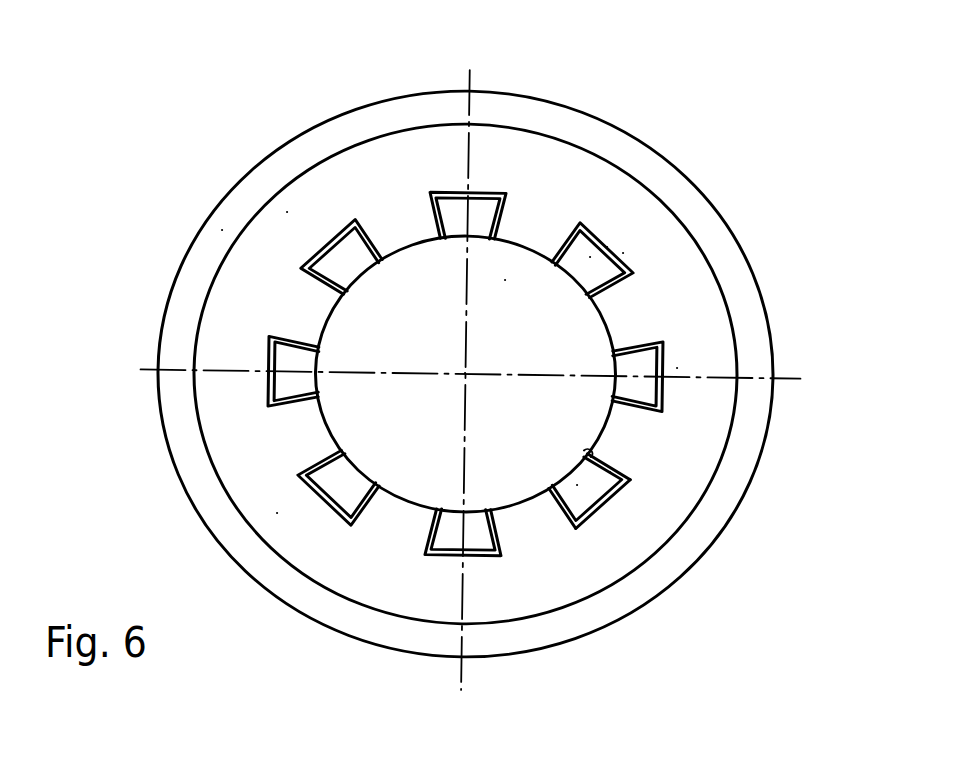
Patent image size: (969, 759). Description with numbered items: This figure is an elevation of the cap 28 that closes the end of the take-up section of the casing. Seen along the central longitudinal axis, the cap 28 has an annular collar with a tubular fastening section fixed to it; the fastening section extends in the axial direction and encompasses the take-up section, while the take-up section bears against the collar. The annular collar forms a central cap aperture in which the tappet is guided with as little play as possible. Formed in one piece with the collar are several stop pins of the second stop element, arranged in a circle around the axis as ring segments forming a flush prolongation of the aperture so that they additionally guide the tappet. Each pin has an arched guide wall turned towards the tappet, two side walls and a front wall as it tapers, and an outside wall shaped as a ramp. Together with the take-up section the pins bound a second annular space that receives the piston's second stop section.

The cap 28 is at (470, 379).